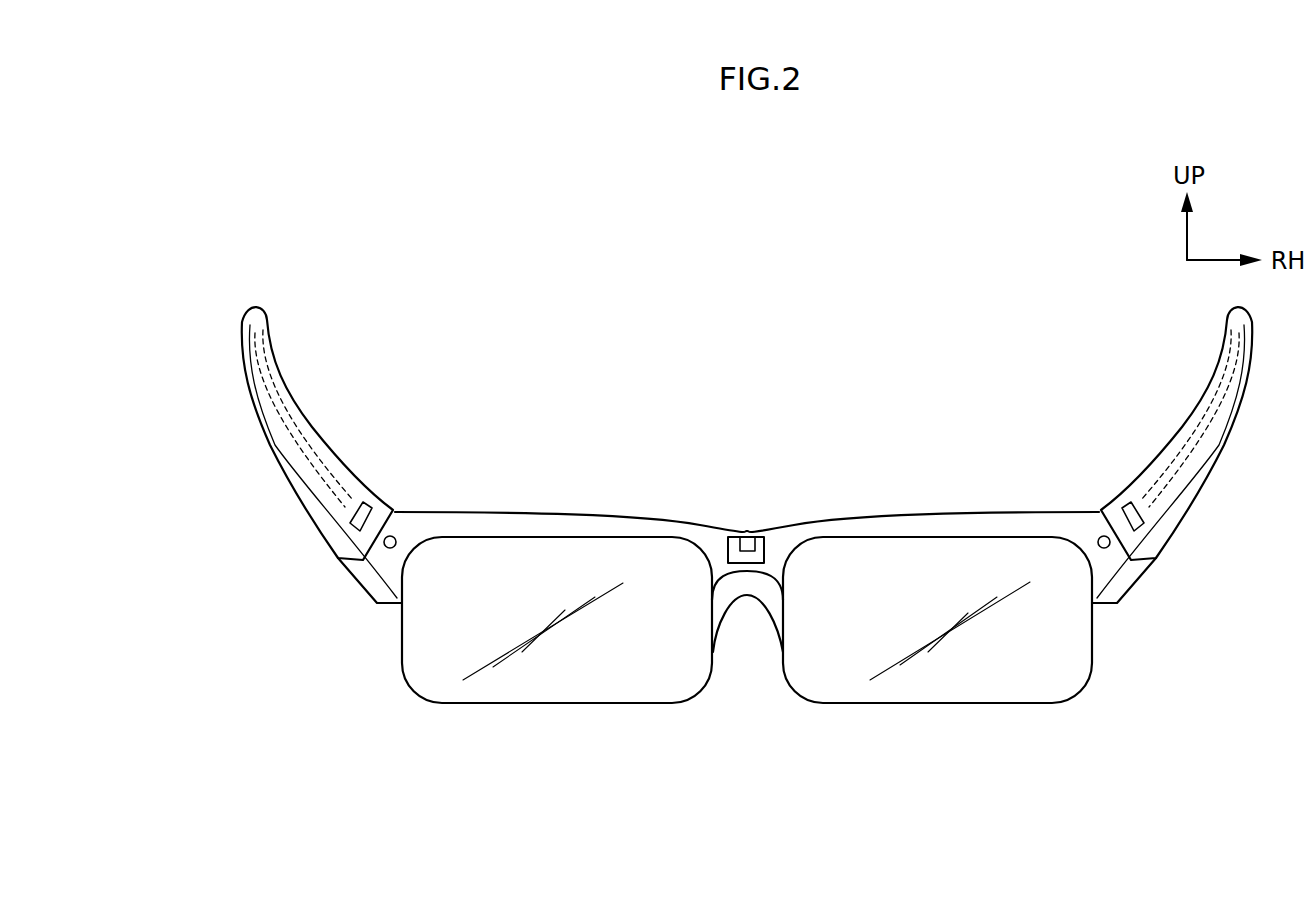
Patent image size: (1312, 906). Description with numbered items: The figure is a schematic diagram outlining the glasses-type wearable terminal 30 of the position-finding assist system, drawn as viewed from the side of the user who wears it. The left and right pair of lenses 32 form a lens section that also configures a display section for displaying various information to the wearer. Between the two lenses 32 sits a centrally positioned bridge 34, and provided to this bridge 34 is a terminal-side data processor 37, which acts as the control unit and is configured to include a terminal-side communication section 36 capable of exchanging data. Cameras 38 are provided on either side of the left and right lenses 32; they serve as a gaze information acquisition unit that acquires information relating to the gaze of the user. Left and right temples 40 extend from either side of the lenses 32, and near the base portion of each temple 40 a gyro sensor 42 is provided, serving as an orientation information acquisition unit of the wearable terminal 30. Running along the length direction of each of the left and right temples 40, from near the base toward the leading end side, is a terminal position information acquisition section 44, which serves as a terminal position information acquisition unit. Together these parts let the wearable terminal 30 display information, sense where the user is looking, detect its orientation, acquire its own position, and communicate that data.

The wearable terminal 30 is at (755, 372).
The lenses 32 is at (428, 660).
The bridge 34 is at (781, 540).
The terminal-side communication section 36 is at (752, 535).
The terminal-side data processor 37 is at (737, 548).
The cameras 38 is at (392, 537).
The temples 40 is at (313, 432).
The gyro sensor 42 is at (352, 521).
The terminal position information acquisition section 44 is at (285, 427).